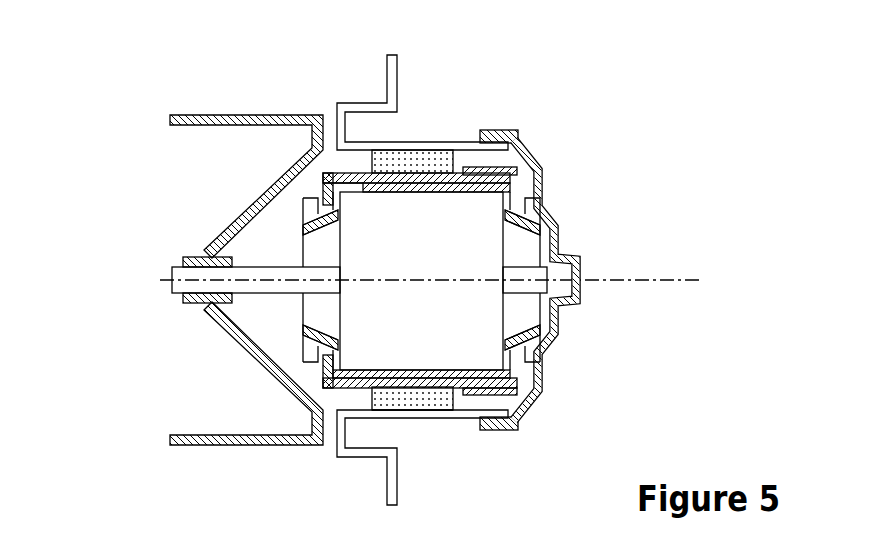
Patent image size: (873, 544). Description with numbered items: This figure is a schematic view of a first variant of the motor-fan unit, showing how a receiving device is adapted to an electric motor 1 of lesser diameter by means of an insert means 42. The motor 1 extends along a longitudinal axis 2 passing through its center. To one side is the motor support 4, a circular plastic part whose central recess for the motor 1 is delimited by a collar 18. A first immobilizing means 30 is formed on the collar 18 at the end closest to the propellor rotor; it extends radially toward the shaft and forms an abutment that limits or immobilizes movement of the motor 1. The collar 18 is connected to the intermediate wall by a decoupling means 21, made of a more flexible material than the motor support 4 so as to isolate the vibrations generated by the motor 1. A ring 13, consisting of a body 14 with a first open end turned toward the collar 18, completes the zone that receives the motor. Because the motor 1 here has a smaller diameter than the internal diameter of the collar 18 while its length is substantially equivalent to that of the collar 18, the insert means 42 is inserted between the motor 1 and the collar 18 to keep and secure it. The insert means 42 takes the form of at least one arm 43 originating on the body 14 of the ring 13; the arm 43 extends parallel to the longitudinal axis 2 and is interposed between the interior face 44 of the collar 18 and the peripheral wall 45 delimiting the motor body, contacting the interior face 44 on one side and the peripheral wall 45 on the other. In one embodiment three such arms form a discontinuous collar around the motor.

The electric motor 1 is at (393, 253).
The longitudinal axis 2 is at (677, 280).
The motor support 4 is at (448, 430).
The ring 13 is at (472, 400).
The body 14 is at (520, 182).
The collar 18 is at (330, 170).
The decoupling means 21 is at (400, 143).
The first immobilizing means 30 is at (303, 200).
The insert means 42 is at (462, 364).
The arm 43 is at (430, 187).
The interior face 44 is at (331, 375).
The peripheral wall 45 is at (361, 378).